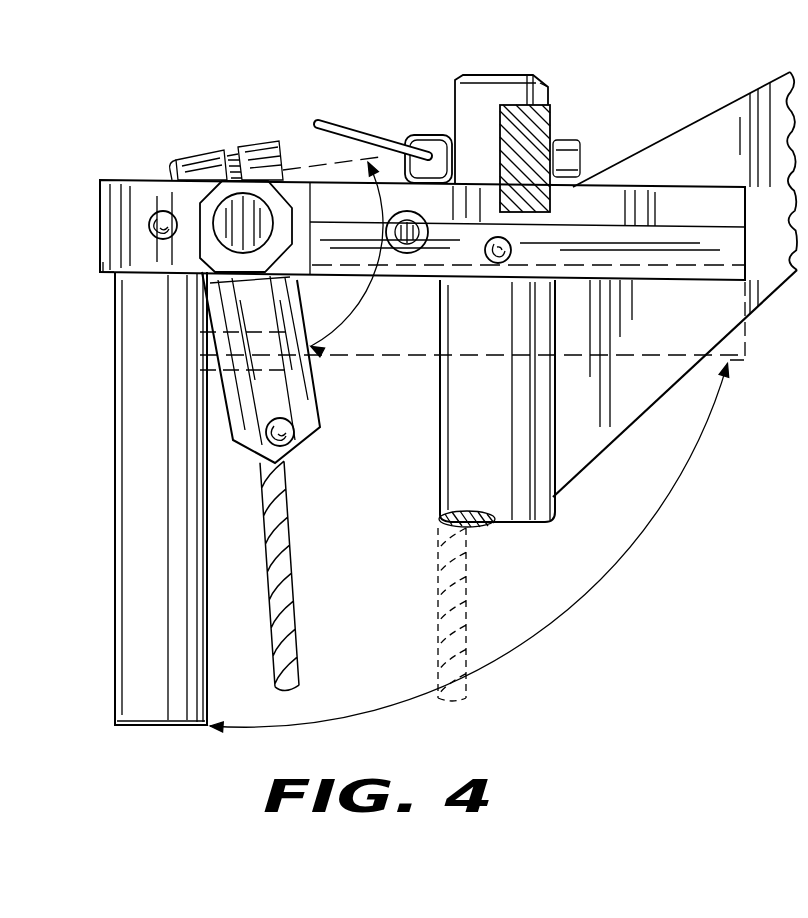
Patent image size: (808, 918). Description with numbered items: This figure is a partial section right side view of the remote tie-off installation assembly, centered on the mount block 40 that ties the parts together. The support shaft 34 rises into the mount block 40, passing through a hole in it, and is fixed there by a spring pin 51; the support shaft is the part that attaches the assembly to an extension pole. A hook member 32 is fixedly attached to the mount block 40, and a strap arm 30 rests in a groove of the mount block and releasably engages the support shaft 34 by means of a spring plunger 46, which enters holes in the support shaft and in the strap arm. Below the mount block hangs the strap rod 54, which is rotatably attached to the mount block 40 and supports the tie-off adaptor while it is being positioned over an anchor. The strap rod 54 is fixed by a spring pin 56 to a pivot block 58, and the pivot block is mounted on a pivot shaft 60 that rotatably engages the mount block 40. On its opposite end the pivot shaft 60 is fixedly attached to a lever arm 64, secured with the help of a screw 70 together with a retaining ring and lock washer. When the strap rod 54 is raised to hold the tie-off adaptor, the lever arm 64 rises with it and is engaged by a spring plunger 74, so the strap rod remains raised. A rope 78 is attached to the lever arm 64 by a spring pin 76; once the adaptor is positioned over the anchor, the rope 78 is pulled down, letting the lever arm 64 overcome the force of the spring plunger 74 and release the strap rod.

The strap arm 30 is at (553, 120).
The hook member 32 is at (733, 100).
The support shaft 34 is at (522, 515).
The mount block 40 is at (672, 192).
The spring plunger 46 is at (425, 135).
The spring pin 51 is at (498, 263).
The strap rod 54 is at (350, 358).
The spring pin 56 is at (163, 211).
The pivot block 58 is at (103, 272).
The pivot shaft 60 is at (250, 205).
The lever arm 64 is at (313, 413).
The screw 70 is at (183, 157).
The spring plunger 74 is at (409, 254).
The spring pin 76 is at (300, 447).
The rope 78 is at (290, 643).